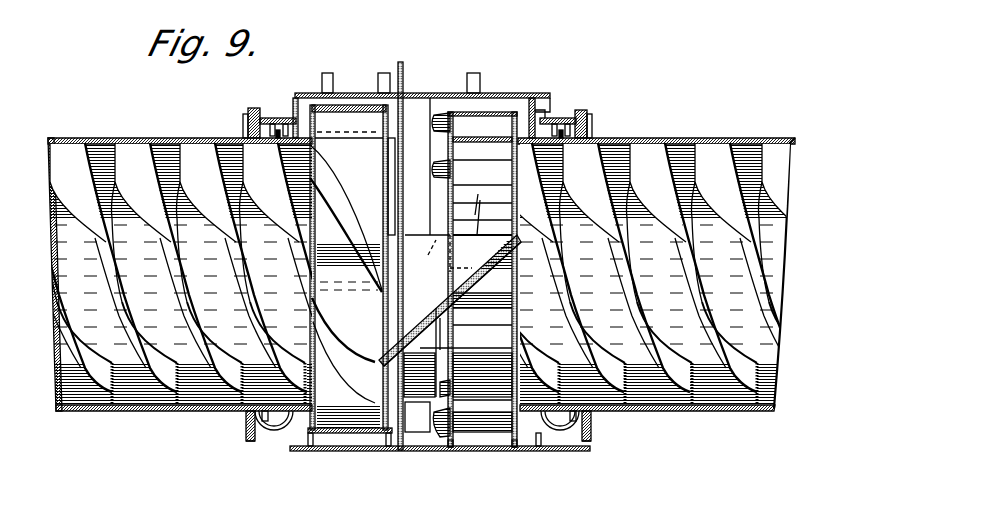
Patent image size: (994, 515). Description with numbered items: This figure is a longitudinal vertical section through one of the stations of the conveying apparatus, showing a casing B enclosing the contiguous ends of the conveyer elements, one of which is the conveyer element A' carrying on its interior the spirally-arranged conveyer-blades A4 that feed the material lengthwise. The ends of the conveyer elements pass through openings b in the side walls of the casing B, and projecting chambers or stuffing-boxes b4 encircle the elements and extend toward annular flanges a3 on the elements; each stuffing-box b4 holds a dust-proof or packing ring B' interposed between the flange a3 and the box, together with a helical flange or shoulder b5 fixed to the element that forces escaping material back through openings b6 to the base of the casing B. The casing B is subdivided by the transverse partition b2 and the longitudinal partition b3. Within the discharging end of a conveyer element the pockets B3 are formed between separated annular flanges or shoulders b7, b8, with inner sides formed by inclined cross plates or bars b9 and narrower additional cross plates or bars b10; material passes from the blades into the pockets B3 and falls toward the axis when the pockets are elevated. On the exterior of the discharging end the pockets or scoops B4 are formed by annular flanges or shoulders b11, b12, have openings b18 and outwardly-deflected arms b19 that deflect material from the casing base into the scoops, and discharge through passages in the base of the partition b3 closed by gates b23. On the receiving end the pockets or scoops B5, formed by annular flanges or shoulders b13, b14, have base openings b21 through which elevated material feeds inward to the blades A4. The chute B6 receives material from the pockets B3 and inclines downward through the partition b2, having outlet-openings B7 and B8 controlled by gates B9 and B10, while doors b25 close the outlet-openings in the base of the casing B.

The conveyer element A' is at (421, 257).
The spirally-arranged conveyer-blades A4 is at (242, 268).
The annular flanges a3 is at (245, 118).
The casing B is at (384, 255).
The dust-proof or packing ring B' is at (427, 264).
The pocket B3 is at (500, 288).
The pocket or scoop B4 is at (463, 122).
The pocket or scoop B5 is at (345, 105).
The chute B6 is at (452, 294).
The outlet-opening B7 is at (428, 326).
The outlet-opening B8 is at (378, 348).
The gate B9 is at (438, 338).
The gate B10 is at (403, 260).
The opening b is at (250, 136).
The transverse partition b2 is at (403, 188).
The longitudinal partition b3 is at (411, 132).
The chamber or stuffing-box b4 is at (568, 122).
The helical flange or shoulder b5 is at (278, 117).
The opening b6 is at (311, 447).
The annular flange or shoulder b7 is at (516, 175).
The annular flange or shoulder b8 is at (456, 160).
The cross plate or bar b9 is at (485, 352).
The additional cross plate or bar b10 is at (512, 325).
The annular flange or shoulder b11 is at (516, 448).
The annular flange or shoulder b12 is at (448, 410).
The annular flange or shoulder b13 is at (388, 433).
The annular flange or shoulder b14 is at (352, 433).
The opening b18 is at (455, 436).
The outwardly-deflected projection or arm b19 is at (440, 112).
The opening b21 is at (342, 297).
The closure or gate b23 is at (447, 230).
The closure or door b25 is at (425, 452).